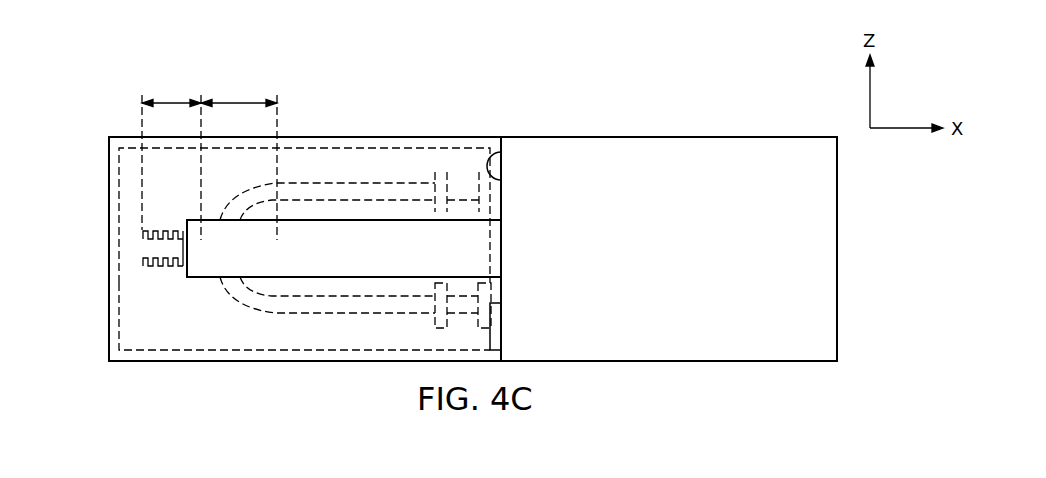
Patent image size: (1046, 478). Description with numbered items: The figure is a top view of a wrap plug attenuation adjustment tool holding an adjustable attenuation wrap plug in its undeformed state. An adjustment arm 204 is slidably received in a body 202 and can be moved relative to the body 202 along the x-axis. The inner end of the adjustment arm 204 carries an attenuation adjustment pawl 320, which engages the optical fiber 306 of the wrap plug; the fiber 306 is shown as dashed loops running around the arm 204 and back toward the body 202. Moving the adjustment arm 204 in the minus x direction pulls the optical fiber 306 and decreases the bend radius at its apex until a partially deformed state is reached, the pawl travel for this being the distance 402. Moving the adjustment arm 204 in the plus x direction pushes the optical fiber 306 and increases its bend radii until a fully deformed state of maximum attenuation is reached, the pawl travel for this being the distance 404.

The body 202 is at (693, 254).
The adjustment arm 204 is at (357, 260).
The optical fiber 306 is at (308, 313).
The attenuation adjustment pawl 320 is at (180, 251).
The distance 402 is at (171, 102).
The distance 404 is at (239, 102).